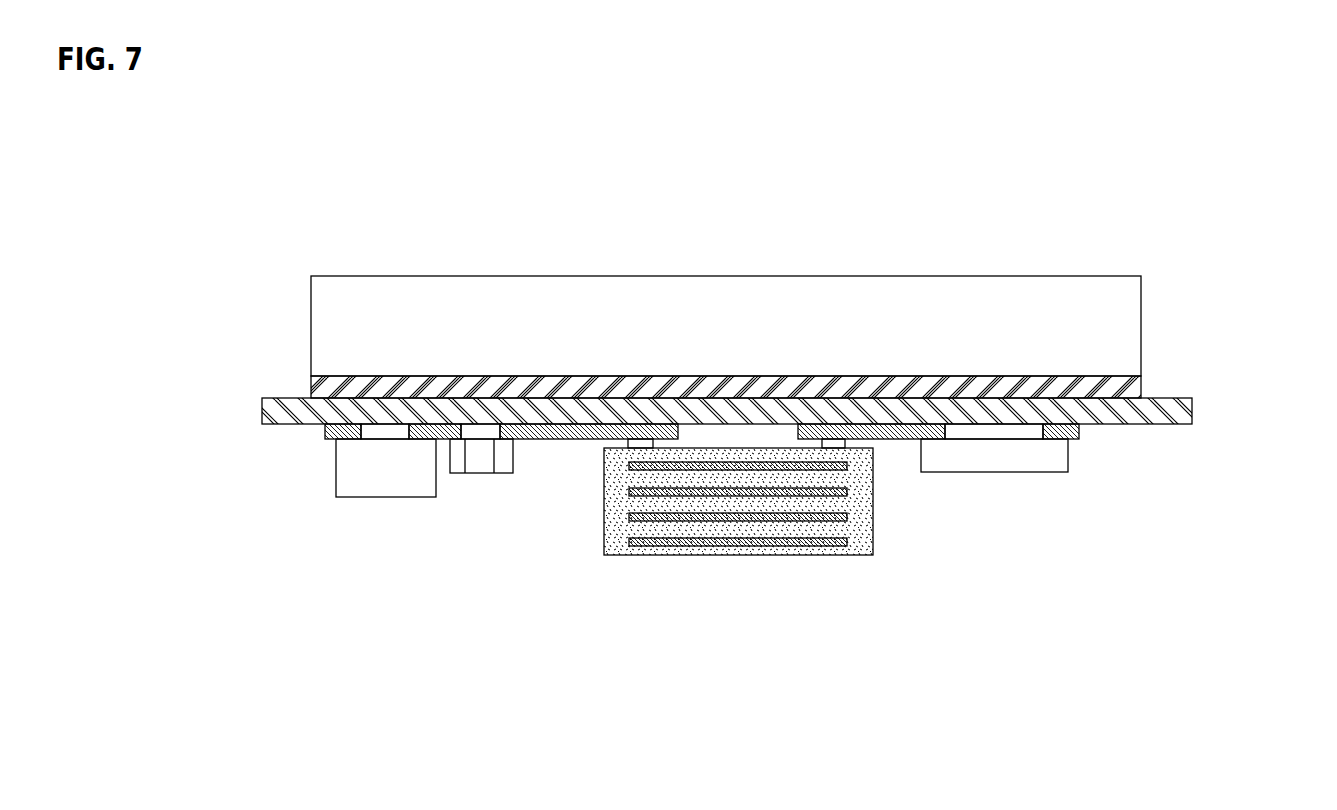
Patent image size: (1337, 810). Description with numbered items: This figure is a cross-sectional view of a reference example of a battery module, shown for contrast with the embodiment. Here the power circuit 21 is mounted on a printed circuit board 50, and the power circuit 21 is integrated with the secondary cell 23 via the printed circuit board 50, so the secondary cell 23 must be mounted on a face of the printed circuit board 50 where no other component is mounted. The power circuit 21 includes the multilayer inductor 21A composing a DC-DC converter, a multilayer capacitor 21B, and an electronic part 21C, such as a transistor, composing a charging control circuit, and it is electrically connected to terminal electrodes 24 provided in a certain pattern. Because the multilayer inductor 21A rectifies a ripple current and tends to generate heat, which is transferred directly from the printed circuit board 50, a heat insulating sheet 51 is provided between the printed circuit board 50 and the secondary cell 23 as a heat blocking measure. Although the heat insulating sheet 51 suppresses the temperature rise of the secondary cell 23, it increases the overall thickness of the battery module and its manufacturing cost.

The secondary cell 23 is at (1108, 310).
The heat insulating sheet 51 is at (1110, 385).
The printed circuit board 50 is at (1158, 407).
The terminal electrodes 24 is at (560, 440).
The power circuit 21 is at (702, 594).
The multilayer inductor 21A is at (738, 560).
The multilayer capacitor 21B is at (478, 455).
The electronic part 21C is at (393, 472).